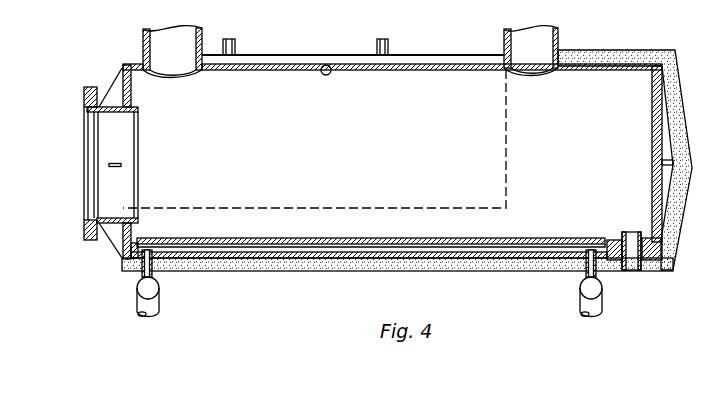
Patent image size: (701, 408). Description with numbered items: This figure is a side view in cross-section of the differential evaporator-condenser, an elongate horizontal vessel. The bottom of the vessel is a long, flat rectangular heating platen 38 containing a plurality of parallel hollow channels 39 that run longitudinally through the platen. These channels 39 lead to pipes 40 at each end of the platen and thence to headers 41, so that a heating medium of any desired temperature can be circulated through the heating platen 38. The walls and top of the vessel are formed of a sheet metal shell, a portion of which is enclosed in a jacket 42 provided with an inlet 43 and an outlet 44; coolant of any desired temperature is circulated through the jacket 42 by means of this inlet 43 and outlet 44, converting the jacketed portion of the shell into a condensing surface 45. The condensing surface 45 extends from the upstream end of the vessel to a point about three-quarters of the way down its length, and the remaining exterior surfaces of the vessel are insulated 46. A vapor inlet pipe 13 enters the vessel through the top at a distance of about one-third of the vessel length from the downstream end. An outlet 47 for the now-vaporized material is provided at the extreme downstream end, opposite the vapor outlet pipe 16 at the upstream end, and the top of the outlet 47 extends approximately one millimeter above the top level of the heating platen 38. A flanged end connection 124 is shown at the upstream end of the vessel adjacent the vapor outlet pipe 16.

The flanged inlet connection 124 is at (83, 100).
The vapor outlet pipe 16 is at (146, 47).
The vapor inlet pipe 13 is at (505, 46).
The jacket 42 is at (285, 55).
The inlet 43 is at (236, 49).
The outlet 44 is at (388, 49).
The condensing surface 45 is at (331, 68).
The insulation 46 is at (661, 50).
The hollow channels 39 is at (187, 248).
The heating platen 38 is at (313, 258).
The pipes 40 is at (164, 272).
The headers 41 is at (135, 283).
The outlet 47 is at (634, 262).